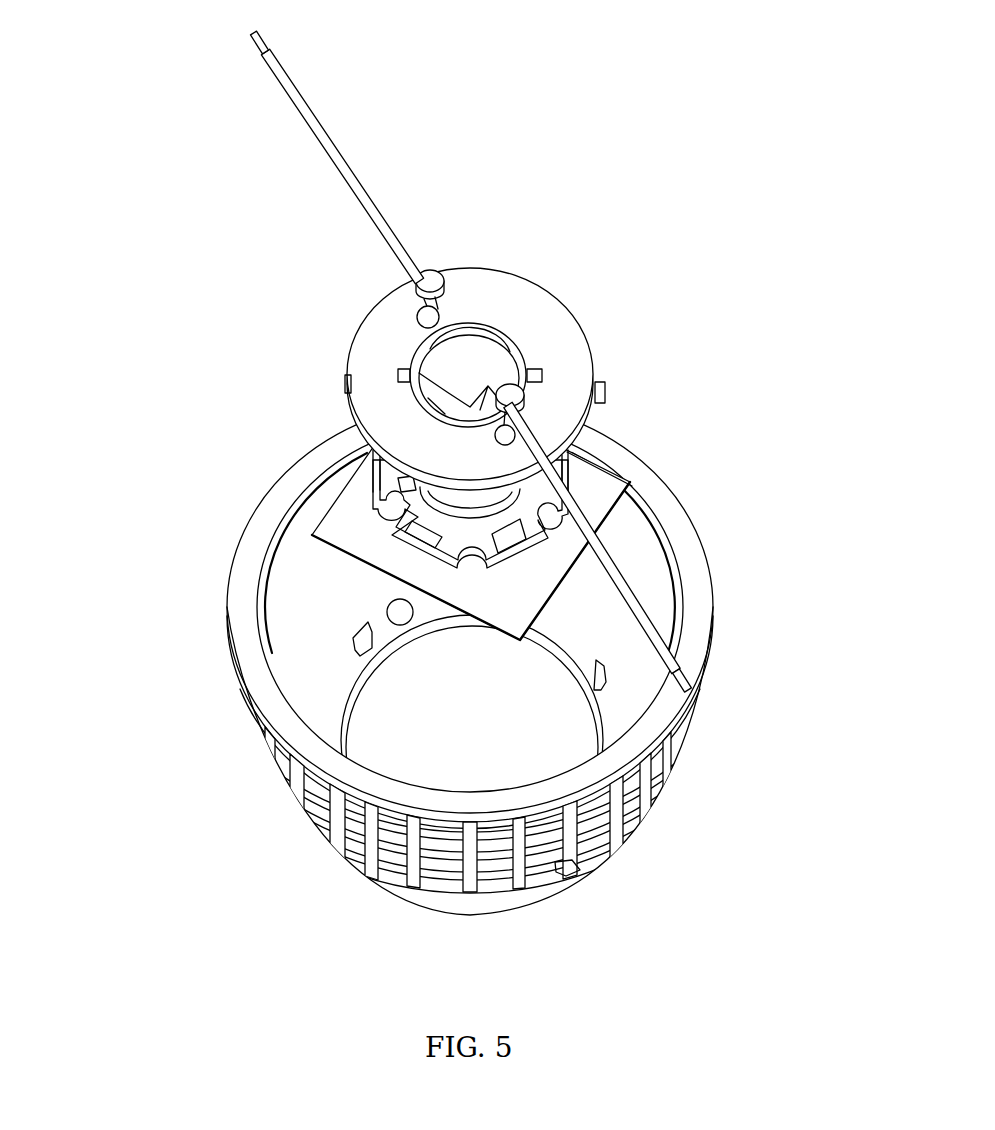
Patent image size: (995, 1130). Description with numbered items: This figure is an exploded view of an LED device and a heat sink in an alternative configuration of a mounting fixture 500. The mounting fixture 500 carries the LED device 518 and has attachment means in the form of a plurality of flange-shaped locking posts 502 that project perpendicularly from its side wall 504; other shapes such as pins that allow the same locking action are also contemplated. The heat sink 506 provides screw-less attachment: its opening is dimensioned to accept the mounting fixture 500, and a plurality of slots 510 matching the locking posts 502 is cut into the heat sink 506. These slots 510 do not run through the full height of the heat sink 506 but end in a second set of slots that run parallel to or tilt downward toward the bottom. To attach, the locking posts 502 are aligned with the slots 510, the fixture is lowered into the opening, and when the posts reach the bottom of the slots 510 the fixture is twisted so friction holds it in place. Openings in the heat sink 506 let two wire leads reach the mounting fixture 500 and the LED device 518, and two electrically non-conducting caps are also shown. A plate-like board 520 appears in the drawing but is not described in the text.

The mounting fixture 500 is at (536, 386).
The locking posts 502 is at (612, 396).
The side wall 504 is at (377, 343).
The heat sink 506 is at (640, 815).
The slots 510 is at (353, 638).
The LED device 518 is at (380, 498).
The circuit board plate 520 is at (340, 527).